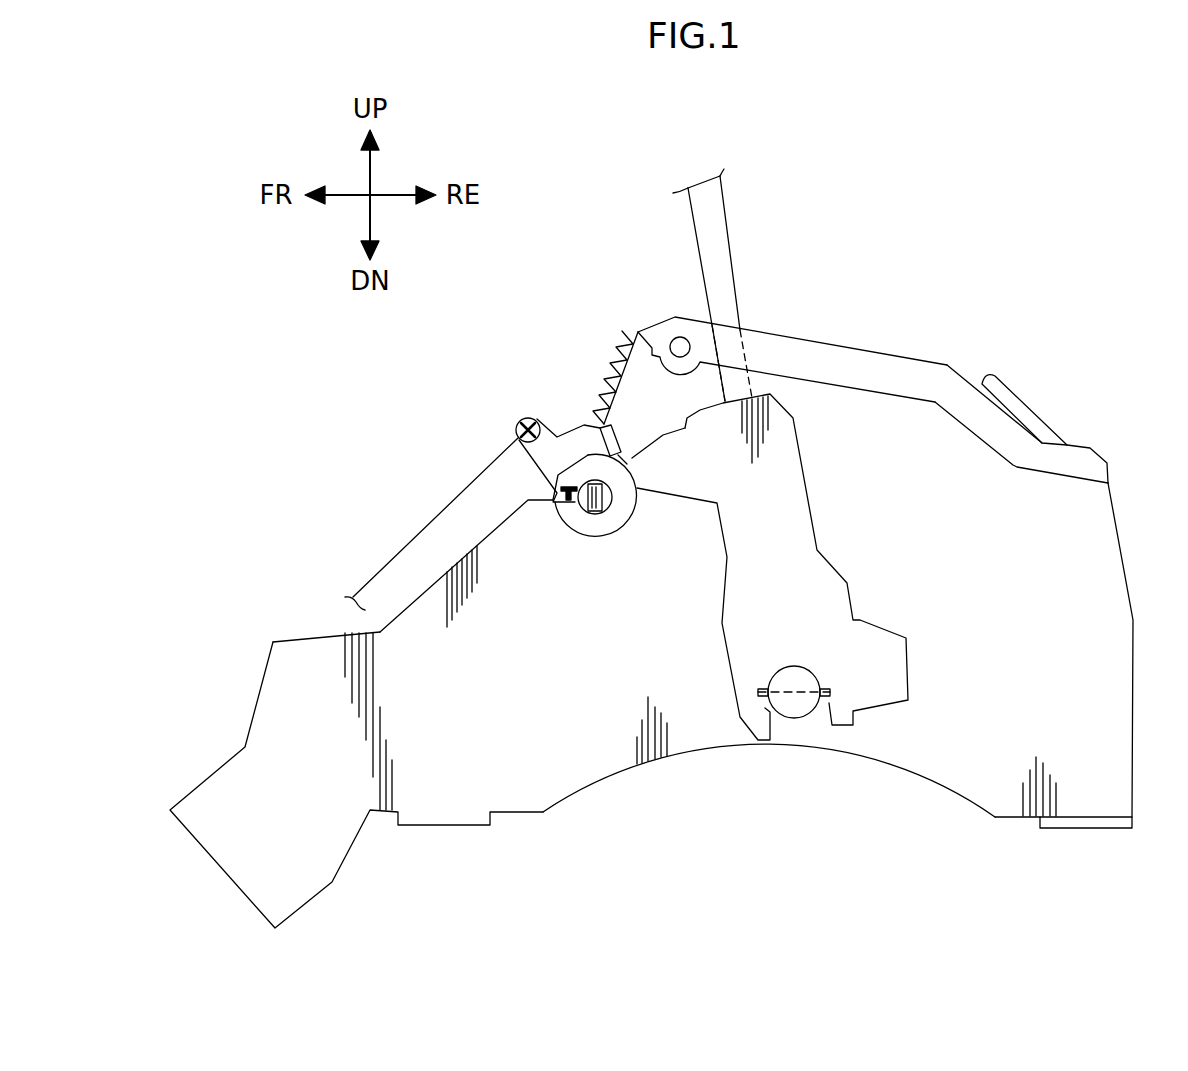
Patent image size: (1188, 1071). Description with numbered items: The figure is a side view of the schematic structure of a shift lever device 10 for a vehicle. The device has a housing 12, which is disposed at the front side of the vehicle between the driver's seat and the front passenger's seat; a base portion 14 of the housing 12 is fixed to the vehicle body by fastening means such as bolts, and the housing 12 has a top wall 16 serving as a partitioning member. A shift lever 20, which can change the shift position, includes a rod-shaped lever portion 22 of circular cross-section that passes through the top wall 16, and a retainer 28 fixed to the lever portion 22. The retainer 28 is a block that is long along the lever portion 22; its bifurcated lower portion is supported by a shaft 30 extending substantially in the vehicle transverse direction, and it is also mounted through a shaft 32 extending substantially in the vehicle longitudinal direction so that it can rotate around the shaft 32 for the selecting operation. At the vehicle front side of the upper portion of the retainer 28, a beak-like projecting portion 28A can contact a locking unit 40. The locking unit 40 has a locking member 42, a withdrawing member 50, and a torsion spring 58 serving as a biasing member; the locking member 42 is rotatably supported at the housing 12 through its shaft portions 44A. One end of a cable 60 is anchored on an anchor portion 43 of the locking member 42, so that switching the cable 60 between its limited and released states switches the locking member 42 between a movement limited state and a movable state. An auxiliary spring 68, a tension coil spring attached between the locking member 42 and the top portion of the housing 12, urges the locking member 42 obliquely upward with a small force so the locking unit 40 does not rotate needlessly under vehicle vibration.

The shift lever device 10 is at (938, 152).
The housing 12 is at (1093, 375).
The base portion 14 is at (958, 789).
The top wall 16 is at (903, 357).
The shift lever 20 is at (787, 190).
The lever portion 22 is at (730, 277).
The retainer 28 is at (795, 418).
The projecting portion 28A is at (633, 456).
The shaft 30 is at (796, 704).
The shaft 32 is at (818, 687).
The locking unit 40 is at (592, 558).
The locking member 42 is at (528, 474).
The anchor portion 43 is at (520, 420).
The shaft portions 44A is at (612, 503).
The withdrawing member 50 is at (620, 538).
The torsion spring 58 is at (577, 492).
The cable 60 is at (446, 506).
The auxiliary spring 68 is at (589, 373).